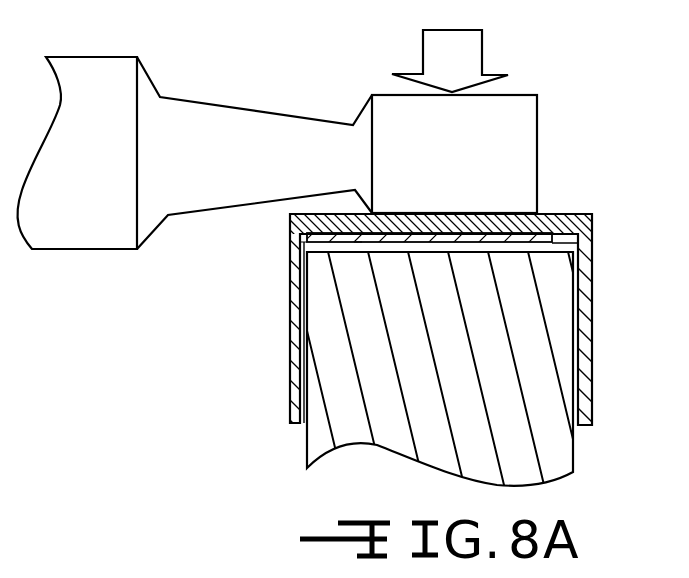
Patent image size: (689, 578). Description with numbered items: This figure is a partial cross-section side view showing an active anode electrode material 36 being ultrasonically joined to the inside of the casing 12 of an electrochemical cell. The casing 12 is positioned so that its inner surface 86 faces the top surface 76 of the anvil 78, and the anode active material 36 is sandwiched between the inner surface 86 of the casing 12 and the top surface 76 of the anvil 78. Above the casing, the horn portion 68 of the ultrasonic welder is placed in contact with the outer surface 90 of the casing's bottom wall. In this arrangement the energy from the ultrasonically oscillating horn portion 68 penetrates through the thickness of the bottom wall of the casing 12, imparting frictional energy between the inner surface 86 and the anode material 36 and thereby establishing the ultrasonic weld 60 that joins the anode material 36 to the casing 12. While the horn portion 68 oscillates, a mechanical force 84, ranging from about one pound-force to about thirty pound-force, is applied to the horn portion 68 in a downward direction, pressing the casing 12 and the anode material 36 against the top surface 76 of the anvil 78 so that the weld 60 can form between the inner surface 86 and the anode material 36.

The casing 12 is at (593, 358).
The active anode electrode material 36 is at (577, 243).
The ultrasonic weld 60 is at (530, 240).
The horn portion 68 is at (520, 135).
The top surface 76 is at (359, 239).
The anvil 78 is at (547, 423).
The mechanical force 84 is at (468, 57).
The inner surface 86 is at (310, 238).
The outer surface 90 is at (556, 214).